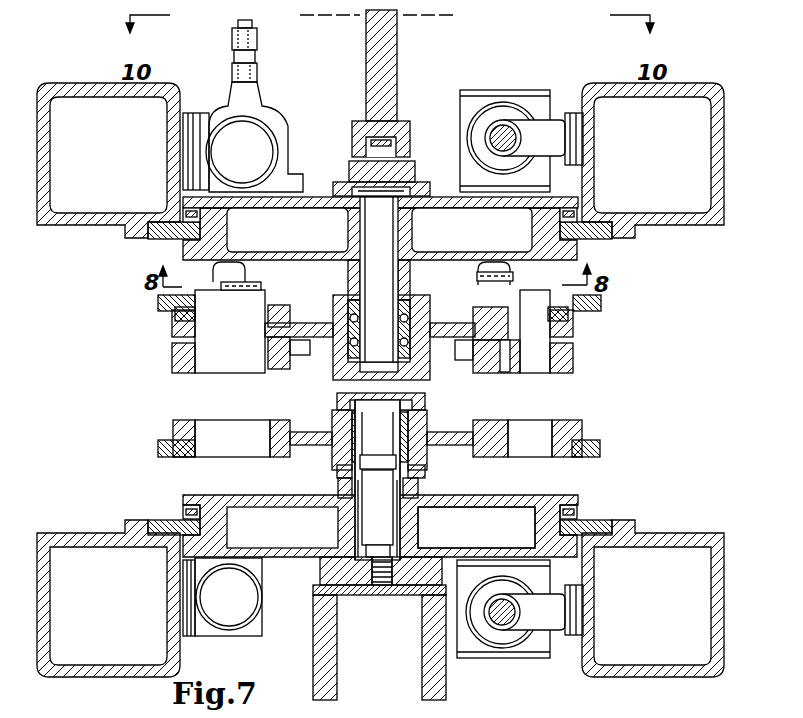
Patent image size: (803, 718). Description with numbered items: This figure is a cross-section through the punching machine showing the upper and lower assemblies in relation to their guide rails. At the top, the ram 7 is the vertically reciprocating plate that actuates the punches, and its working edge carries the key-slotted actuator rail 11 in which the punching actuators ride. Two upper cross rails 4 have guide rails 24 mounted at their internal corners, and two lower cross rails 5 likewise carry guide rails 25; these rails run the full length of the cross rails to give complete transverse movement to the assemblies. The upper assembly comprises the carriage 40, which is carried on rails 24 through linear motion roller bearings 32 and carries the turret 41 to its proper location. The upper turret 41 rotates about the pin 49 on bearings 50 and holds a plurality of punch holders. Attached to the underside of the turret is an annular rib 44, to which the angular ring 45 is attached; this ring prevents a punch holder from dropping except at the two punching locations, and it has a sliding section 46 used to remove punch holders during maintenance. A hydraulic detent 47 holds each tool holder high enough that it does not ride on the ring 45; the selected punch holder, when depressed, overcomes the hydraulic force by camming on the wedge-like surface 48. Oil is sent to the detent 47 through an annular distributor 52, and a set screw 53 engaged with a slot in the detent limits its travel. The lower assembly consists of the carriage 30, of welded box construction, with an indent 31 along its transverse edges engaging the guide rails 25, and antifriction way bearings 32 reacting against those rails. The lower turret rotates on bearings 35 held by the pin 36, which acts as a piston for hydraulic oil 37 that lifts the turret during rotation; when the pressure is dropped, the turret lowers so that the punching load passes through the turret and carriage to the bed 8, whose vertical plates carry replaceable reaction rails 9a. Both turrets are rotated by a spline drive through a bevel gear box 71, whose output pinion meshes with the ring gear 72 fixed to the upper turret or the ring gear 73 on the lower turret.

The upper cross rails 4 is at (72, 224).
The lower cross rails 5 is at (95, 678).
The ram 7 is at (398, 66).
The bed 8 is at (313, 653).
The reaction rails 9a is at (313, 590).
The actuator rail 11 is at (352, 136).
The guide rails 24 is at (160, 240).
The guide rails 25 is at (150, 522).
The carriage 30 is at (576, 496).
The indent 31 is at (545, 522).
The antifriction way bearings 32 is at (186, 212).
The bearings 35 is at (428, 430).
The pin 36 is at (410, 512).
The hydraulic oil 37 is at (355, 545).
The carriage 40 is at (583, 246).
The turret 41 is at (580, 323).
The annular rib 44 is at (498, 262).
The angular ring 45 is at (477, 277).
The sliding section 46 is at (262, 286).
The hydraulic detent 47 is at (265, 345).
The wedge-like surface 48 is at (508, 350).
The pin 49 is at (386, 248).
The bearings 50 is at (418, 320).
The annular distributor 52 is at (300, 354).
The set screw 53 is at (275, 368).
The bevel gear box 71 is at (522, 90).
The ring gear 72 is at (158, 306).
The ring gear 73 is at (158, 448).